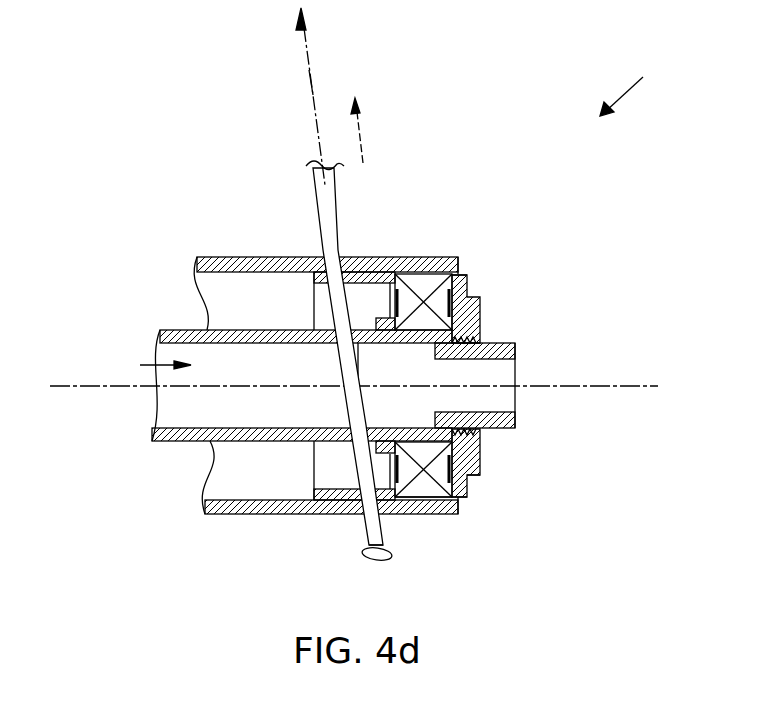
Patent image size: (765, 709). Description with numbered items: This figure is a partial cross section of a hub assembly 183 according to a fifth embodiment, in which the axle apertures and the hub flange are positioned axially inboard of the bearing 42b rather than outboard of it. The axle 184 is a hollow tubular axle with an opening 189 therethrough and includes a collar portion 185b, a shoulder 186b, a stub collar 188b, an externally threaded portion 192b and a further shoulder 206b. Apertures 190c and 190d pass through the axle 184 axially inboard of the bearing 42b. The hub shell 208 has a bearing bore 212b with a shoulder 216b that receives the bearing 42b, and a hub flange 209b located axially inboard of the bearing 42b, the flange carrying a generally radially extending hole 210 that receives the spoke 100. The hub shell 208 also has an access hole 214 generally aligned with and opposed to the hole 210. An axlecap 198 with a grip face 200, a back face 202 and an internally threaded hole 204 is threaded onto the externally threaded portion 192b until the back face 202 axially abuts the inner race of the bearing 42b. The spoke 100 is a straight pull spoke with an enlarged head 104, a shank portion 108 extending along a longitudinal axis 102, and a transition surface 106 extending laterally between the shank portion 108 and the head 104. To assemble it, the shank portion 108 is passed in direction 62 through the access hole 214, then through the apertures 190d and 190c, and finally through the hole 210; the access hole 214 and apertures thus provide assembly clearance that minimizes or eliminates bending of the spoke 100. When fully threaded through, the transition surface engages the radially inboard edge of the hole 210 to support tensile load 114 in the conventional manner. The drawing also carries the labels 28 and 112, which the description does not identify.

The central axis 28 is at (617, 386).
The bearing 42b is at (430, 288).
The direction 62 is at (363, 141).
The spoke 100 is at (344, 290).
The longitudinal axis 102 is at (318, 125).
The enlarged head 104 is at (372, 561).
The transition surface 106 is at (366, 546).
The shank portion 108 is at (331, 302).
The needle axis 112 is at (313, 92).
The tensile load 114 is at (307, 50).
The hub assembly 183 is at (644, 83).
The axle 184 is at (178, 330).
The collar portion 185b is at (420, 490).
The shoulder 186b is at (447, 304).
The stub collar 188b is at (460, 458).
The opening 189 is at (140, 365).
The aperture 190c is at (386, 318).
The aperture 190d is at (330, 490).
The externally threaded portion 192b is at (482, 330).
The axlecap 198 is at (468, 281).
The grip face 200 is at (480, 480).
The back face 202 is at (432, 482).
The internally threaded hole 204 is at (472, 412).
The shoulder 206b is at (480, 466).
The hub shell 208 is at (252, 507).
The hub flange 209b is at (360, 324).
The hole 210 is at (352, 284).
The bearing bore 212b is at (480, 306).
The access hole 214 is at (345, 518).
The shoulder 216b is at (412, 505).